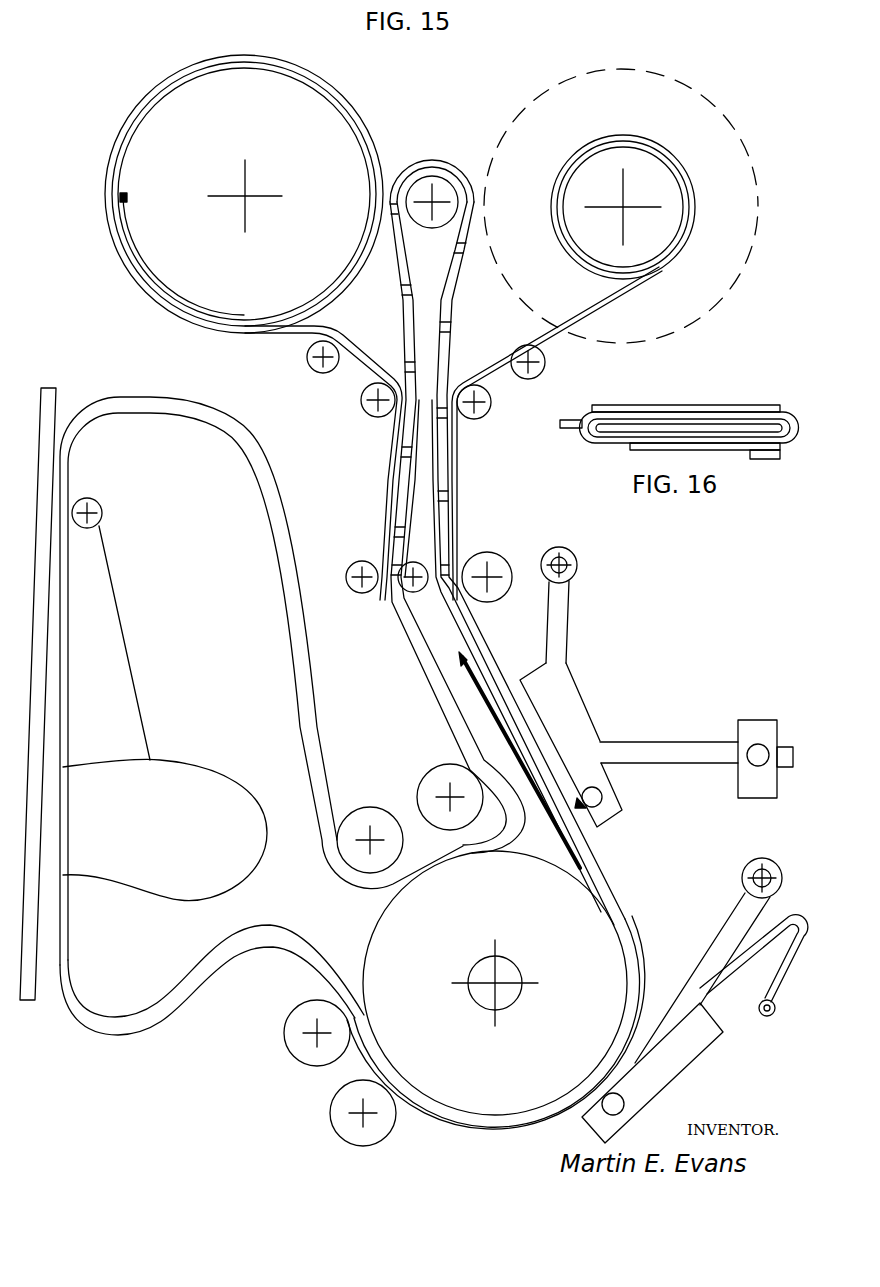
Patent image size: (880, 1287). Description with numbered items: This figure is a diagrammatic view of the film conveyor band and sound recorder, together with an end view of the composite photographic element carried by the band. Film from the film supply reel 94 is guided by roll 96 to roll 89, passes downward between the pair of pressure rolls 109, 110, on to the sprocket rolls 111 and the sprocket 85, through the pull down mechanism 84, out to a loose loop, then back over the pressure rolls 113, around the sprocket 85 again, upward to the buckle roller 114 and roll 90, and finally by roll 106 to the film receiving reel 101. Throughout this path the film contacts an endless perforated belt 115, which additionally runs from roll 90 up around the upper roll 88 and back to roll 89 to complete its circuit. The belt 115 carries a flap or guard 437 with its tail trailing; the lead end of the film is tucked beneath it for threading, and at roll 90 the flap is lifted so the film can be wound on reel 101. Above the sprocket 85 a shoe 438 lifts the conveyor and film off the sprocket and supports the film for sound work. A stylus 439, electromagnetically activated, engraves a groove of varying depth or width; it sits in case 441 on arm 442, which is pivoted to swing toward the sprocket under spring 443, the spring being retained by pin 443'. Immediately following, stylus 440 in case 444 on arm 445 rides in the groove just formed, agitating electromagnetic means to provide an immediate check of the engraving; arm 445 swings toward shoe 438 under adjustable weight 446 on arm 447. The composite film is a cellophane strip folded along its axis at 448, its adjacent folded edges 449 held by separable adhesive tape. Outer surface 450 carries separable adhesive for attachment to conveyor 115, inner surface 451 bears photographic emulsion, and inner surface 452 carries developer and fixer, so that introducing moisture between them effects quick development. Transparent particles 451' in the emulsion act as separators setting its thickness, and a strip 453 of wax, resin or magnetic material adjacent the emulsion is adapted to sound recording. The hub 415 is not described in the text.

In FIG. 15, the pull down mechanism 84 is at (87, 600).
In FIG. 15, the sprocket 85 is at (400, 918).
In FIG. 15, the upper roll 88 is at (440, 188).
In FIG. 15, the roll 89 is at (365, 402).
In FIG. 15, the roll 90 is at (486, 410).
In FIG. 15, the film supply reel 94 is at (130, 246).
In FIG. 15, the roll 96 is at (318, 363).
In FIG. 15, the film receiving reel 101 is at (670, 207).
In FIG. 15, the roll 106 is at (536, 364).
In FIG. 15, the pressure roll 109 is at (358, 562).
In FIG. 15, the pressure roll 110 is at (400, 584).
In FIG. 15, the sprocket rolls 111 is at (422, 795).
In FIG. 15, the pressure rolls 113 is at (336, 1097).
In FIG. 15, the buckle roller 114 is at (483, 574).
In FIG. 15, the endless belt 115 is at (405, 178).
In FIG. 15, the capstan hub 415 is at (526, 960).
In FIG. 15, the flap or guard 437 is at (496, 665).
In FIG. 15, the shoe 438 is at (556, 857).
In FIG. 15, the stylus 439 is at (616, 1095).
In FIG. 15, the stylus 440 is at (603, 803).
In FIG. 15, the case 441 is at (705, 1045).
In FIG. 15, the arm 442 is at (740, 920).
In FIG. 15, the spring 443 is at (754, 958).
In FIG. 15, the pin 443' is at (788, 999).
In FIG. 15, the case 444 is at (552, 700).
In FIG. 15, the arm 445 is at (567, 612).
In FIG. 15, the adjustable weight 446 is at (757, 735).
In FIG. 15, the arm 447 is at (678, 740).
In FIG. 16, the fold 448 is at (790, 420).
In FIG. 16, the folded edges 449 is at (572, 440).
In FIG. 15, the outer surface 450 is at (386, 333).
In FIG. 16, the outer surface 450 is at (625, 405).
In FIG. 16, the inner surface 451 is at (689, 398).
In FIG. 16, the transparent particles 451' is at (672, 457).
In FIG. 16, the inner surface 452 is at (740, 426).
In FIG. 16, the strip of material 453 is at (775, 456).